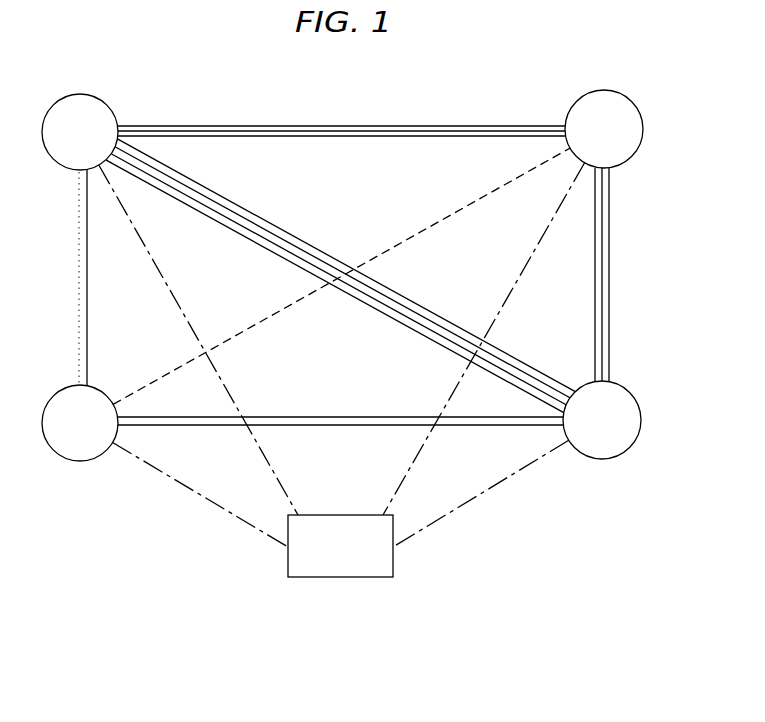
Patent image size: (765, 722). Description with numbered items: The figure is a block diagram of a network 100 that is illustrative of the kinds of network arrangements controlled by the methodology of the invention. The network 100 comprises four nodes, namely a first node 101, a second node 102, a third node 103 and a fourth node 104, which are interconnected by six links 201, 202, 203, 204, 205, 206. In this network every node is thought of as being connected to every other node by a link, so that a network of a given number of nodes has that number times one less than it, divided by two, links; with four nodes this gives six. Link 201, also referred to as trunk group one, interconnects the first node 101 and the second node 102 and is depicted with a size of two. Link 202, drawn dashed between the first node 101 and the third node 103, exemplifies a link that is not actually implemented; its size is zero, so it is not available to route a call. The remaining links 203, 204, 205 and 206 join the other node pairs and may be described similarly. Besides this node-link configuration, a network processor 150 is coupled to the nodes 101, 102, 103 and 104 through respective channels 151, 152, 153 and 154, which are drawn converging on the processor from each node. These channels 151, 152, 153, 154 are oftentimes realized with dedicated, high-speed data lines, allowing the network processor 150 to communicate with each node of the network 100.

The network 100 is at (356, 73).
The node N1 101 is at (85, 461).
The node N2 102 is at (583, 458).
The node N3 103 is at (634, 104).
The node N4 104 is at (112, 106).
The network processor 150 is at (340, 578).
The channel 151 is at (222, 510).
The channel 152 is at (501, 486).
The channel 153 is at (403, 481).
The channel 154 is at (277, 480).
The link 1 201 is at (374, 426).
The link 2 202 is at (455, 214).
The link 203 is at (65, 272).
The link 204 is at (588, 270).
The link 205 is at (257, 252).
The link 206 is at (420, 142).